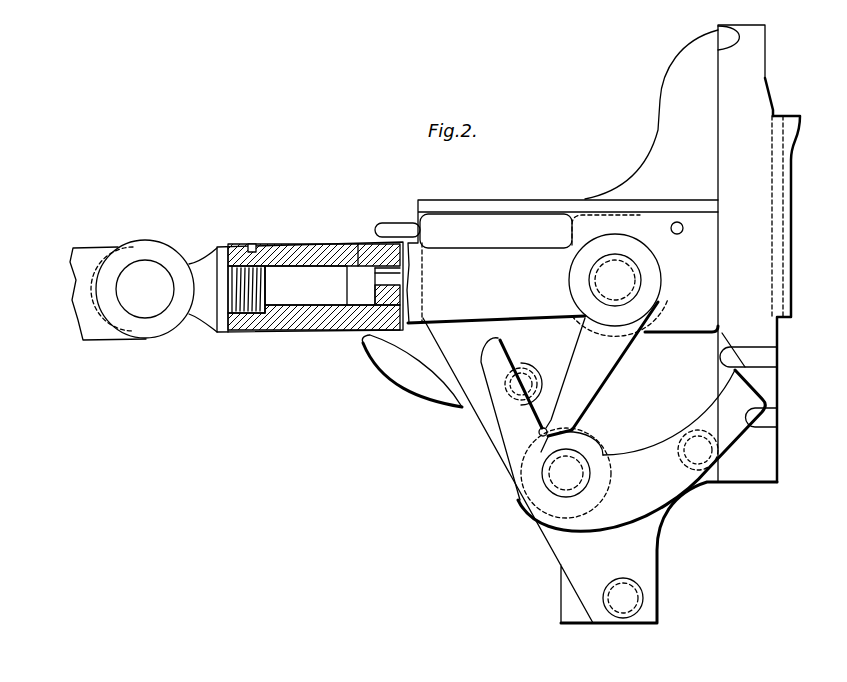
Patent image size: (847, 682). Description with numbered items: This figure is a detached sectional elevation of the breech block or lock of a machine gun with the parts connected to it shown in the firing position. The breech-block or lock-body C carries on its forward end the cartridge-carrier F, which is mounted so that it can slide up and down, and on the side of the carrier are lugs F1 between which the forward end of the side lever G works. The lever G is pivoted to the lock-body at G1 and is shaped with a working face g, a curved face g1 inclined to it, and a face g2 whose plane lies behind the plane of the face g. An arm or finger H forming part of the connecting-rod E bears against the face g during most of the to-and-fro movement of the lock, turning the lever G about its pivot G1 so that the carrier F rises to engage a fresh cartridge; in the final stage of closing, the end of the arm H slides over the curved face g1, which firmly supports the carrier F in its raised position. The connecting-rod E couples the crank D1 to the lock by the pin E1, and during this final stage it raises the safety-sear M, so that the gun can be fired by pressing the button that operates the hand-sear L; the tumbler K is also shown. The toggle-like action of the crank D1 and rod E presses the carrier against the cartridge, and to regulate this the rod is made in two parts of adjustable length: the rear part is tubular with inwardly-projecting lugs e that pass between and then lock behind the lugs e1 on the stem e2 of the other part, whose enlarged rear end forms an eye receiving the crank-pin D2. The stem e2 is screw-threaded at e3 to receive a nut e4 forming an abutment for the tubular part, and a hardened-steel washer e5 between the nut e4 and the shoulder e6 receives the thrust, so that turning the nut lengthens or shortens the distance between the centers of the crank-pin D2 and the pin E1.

The crank D1 is at (143, 293).
The crank-pin D2 is at (145, 289).
The inwardly-projecting lugs e is at (357, 262).
The lugs on the stem e1 is at (366, 243).
The stem e2 is at (306, 285).
The screw-thread e3 is at (246, 333).
The nut e4 is at (268, 333).
The hardened-steel washer e5 is at (230, 333).
The shoulder e6 is at (219, 253).
The safety-sear M is at (387, 228).
The breech-block or lock-body C is at (651, 114).
The connecting-rod E is at (562, 266).
The pin E1 is at (618, 285).
The cartridge-carrier F is at (808, 126).
The lugs F1 is at (770, 357).
The tumbler K is at (412, 371).
The face g2 is at (506, 346).
The arm or finger H is at (602, 369).
The curved face g1 is at (546, 435).
The working face g is at (541, 444).
The pivot G1 is at (566, 473).
The side lever G is at (641, 450).
The hand-sear L is at (600, 470).